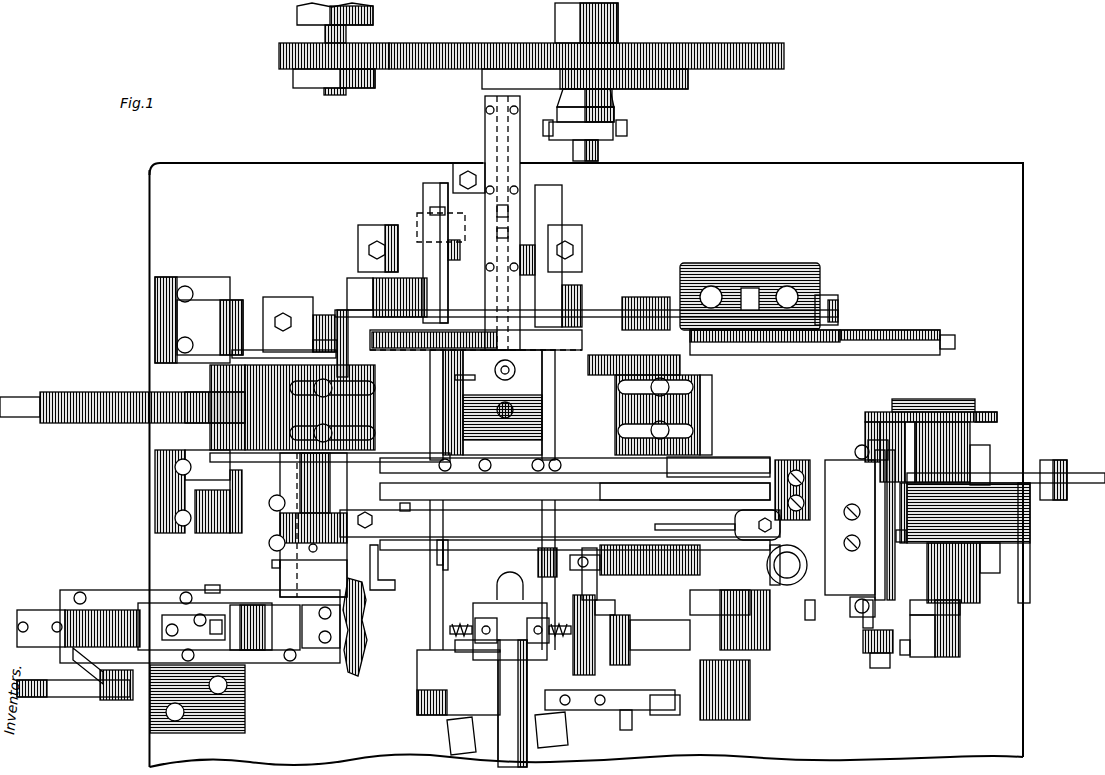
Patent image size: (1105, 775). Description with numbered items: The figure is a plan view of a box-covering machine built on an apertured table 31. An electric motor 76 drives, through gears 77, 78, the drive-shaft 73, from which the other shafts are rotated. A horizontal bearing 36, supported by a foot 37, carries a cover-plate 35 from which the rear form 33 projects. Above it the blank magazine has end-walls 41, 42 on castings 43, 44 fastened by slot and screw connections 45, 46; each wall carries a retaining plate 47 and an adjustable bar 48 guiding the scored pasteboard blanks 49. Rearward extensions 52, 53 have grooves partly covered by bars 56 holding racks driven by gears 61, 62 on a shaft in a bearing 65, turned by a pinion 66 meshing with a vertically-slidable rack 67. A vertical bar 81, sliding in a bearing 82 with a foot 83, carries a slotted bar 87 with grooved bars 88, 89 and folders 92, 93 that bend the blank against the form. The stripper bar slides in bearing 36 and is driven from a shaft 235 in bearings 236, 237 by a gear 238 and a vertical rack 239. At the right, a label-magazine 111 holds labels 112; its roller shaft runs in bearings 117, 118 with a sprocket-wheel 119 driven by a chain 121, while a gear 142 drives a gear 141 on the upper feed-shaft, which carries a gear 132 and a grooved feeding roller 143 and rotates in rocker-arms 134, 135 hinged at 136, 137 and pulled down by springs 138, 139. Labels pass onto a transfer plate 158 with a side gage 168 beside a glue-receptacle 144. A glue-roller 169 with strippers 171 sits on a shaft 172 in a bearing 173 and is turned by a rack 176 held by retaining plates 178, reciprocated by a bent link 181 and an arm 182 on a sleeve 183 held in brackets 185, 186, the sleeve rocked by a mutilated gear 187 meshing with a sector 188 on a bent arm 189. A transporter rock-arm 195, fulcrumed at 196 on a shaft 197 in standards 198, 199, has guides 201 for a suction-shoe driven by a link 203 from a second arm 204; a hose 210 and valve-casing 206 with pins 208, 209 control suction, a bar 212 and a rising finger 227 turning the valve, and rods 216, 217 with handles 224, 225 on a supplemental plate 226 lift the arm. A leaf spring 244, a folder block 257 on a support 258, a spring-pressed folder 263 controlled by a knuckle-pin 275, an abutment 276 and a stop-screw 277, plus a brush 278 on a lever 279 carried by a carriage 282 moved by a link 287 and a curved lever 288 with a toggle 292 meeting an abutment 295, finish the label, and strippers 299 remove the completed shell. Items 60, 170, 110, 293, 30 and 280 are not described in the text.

The table 31 is at (587, 465).
The electric motor 76 is at (297, 18).
The gear 77 is at (378, 43).
The gear 78 is at (487, 43).
The drive-shaft 73 is at (600, 152).
The foot 37 is at (475, 162).
The horizontal guide or bearing 36 is at (520, 210).
The cover-plate 35 is at (500, 233).
The horizontal rearward extension 52 is at (430, 192).
The longitudinal bars 56 is at (446, 183).
The shaft 235 is at (470, 193).
The bearing 236 is at (412, 228).
The vertical sliding rack 239 is at (420, 214).
The gear 238 is at (456, 260).
The gear 62 is at (362, 256).
The vertically-slidable rack 67 is at (350, 291).
The bearing 65 is at (313, 303).
The pinion 66 is at (340, 331).
The bracket 185 is at (203, 300).
The arm 182 is at (250, 352).
The horizontal rearward extension 53 is at (582, 232).
The bearing 237 is at (574, 250).
The gear 61 is at (582, 286).
The bracket 60 is at (626, 300).
The bent link 181 is at (690, 298).
The retaining plates or strips 178 is at (880, 331).
The rack teeth 170 is at (851, 336).
The rack 176 is at (948, 337).
The bearing 173 is at (634, 365).
The sprocket-chain 121 is at (956, 399).
The sprocket-wheel 119 is at (986, 412).
The coil contractile spring 139 is at (908, 425).
The hinge 137 is at (932, 425).
The rocker-arm 135 is at (878, 420).
The gear 141 is at (868, 412).
The gear 142 is at (985, 418).
The upstanding rod 217 is at (855, 450).
The bearing 117 is at (966, 440).
The label-magazine 111 is at (1032, 471).
The labels 112 is at (968, 543).
The grooved label-feeding roller 143 is at (908, 497).
The handle 224 is at (904, 541).
The support column 110 is at (968, 582).
The valve-casing 206 is at (815, 575).
The handle 225 is at (875, 480).
The supplemental plate 226 is at (887, 500).
The bar 212 is at (852, 605).
The pin 209 is at (862, 612).
The upstanding rod 216 is at (866, 626).
The gear 132 is at (880, 668).
The rocker-arm 134 is at (914, 636).
The hinge 136 is at (956, 656).
The coil contractile spring 138 is at (905, 656).
The bearing 118 is at (962, 632).
The pin 208 is at (810, 612).
The hose 210 is at (760, 600).
The glue-receptacle 144 is at (751, 690).
The end-wall 41 is at (456, 402).
The end-wall 42 is at (500, 380).
The scored pasteboard blanks 49 is at (495, 402).
The vertical adjustable bar 48 is at (507, 389).
The upright retaining strip or plate 47 is at (437, 463).
The horizontal slotted bar 87 is at (575, 466).
The bender or folder 93 is at (457, 522).
The bent link 203 is at (685, 491).
The bent rock-arm 195 is at (560, 525).
The longitudinal guides 201 is at (478, 562).
The vertically-disposed bar 81 is at (373, 522).
The bearing 82 is at (408, 511).
The side gage 168 is at (760, 466).
The glue-roller 169 is at (650, 562).
The registration or transfer plate 158 is at (761, 565).
The casting 44 is at (700, 412).
The slot and screw connection 45 is at (695, 382).
The slot and screw connection 46 is at (693, 390).
The casting 43 is at (292, 408).
The second arm 204 is at (275, 455).
The sleeve 183 is at (210, 380).
The bent arm 189 is at (10, 397).
The sector 188 is at (68, 424).
The mutilated gear 187 is at (200, 398).
The bracket 186 is at (160, 505).
The standard 198 is at (283, 497).
The fulcrum 196 is at (310, 549).
The standard 199 is at (313, 578).
The arm 293 is at (212, 590).
The stationary shaft 197 is at (280, 562).
The abutment 295 is at (200, 589).
The foot 83 is at (372, 566).
The rising finger 227 is at (436, 552).
The horizontal bar 88 is at (443, 562).
The rear part of form 33 is at (510, 560).
The bender or folder 92 is at (547, 570).
The horizontal bar 89 is at (580, 565).
The strippers 171 is at (590, 572).
The block 257 is at (510, 630).
The flat leaf spring 244 is at (527, 758).
The shaft 30 is at (498, 757).
The support 258 is at (478, 668).
The strippers 299 is at (452, 740).
The spring-pressed folder 263 is at (592, 658).
The shaft 172 is at (632, 578).
The adjustable stop-screw 277 is at (580, 700).
The knuckle-pin 275 is at (628, 718).
The abutment 276 is at (670, 718).
The brush 278 is at (357, 676).
The lever 279 is at (265, 634).
The toggle 292 is at (226, 638).
The sliding carriage 282 is at (97, 650).
The link 287 is at (88, 664).
The curved lever 288 is at (48, 690).
The block 280 is at (118, 702).